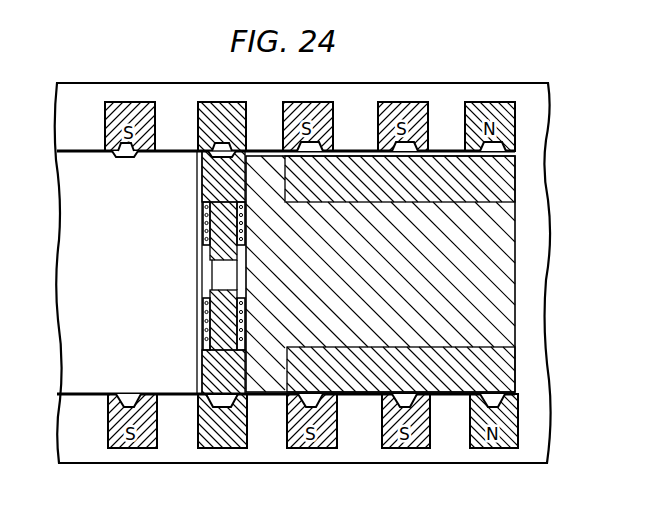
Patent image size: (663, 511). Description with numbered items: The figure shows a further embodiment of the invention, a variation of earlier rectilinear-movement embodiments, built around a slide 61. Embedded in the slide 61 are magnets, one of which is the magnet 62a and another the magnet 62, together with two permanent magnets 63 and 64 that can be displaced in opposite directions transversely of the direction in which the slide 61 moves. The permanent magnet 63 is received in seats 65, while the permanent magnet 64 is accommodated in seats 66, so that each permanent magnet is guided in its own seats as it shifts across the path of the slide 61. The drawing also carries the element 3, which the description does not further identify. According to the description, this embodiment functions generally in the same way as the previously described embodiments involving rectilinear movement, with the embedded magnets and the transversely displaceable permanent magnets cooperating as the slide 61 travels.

The electromagnet 3 is at (219, 254).
The slide 61 is at (502, 305).
The magnet 62 is at (355, 380).
The magnet 62a is at (443, 165).
The permanent magnet 63 is at (215, 357).
The permanent magnet 64 is at (217, 190).
The seats 65 is at (133, 396).
The seats 66 is at (122, 157).